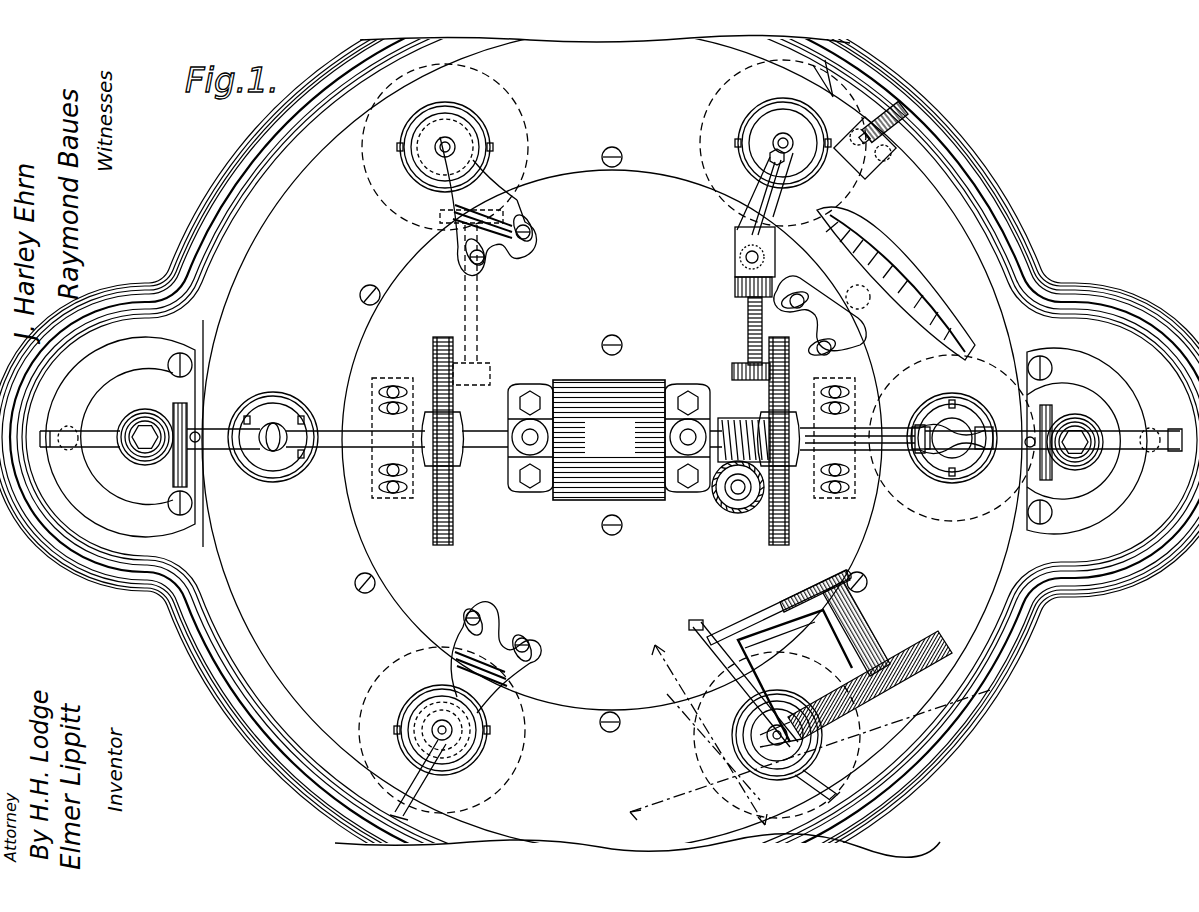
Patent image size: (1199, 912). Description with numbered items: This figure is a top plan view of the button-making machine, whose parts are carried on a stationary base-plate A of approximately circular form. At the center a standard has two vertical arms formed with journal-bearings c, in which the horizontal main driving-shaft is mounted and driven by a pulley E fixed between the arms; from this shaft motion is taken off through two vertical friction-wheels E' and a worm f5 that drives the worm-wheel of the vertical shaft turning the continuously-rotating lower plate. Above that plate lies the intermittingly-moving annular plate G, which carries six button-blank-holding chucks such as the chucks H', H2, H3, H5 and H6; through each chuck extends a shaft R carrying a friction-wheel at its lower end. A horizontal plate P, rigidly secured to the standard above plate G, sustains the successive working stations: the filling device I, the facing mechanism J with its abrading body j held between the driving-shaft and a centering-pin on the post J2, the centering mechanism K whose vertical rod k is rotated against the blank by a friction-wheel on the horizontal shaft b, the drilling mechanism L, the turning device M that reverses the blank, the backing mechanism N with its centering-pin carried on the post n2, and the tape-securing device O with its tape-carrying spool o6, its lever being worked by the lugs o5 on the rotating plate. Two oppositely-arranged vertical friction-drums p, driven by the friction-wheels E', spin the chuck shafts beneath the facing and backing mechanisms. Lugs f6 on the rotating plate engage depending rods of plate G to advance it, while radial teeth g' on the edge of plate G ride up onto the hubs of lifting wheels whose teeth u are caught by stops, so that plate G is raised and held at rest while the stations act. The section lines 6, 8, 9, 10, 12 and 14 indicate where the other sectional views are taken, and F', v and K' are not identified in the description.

The base-plate A is at (1000, 613).
The shaft R is at (905, 788).
The annular plate G is at (612, 440).
The inner plate F' is at (612, 440).
The horizontal plate P is at (611, 439).
The section line 12 is at (201, 434).
The cylindrical body j is at (282, 425).
The post J2 is at (130, 425).
The teeth u is at (596, 437).
The facing mechanism J is at (272, 450).
The friction-drums p is at (602, 438).
The friction-wheels E' is at (449, 441).
The journal-bearings c is at (602, 428).
The pulley E is at (679, 441).
The worm f5 is at (730, 418).
The lugs f6 is at (720, 506).
The section line 8 is at (751, 346).
The section line 9 is at (764, 225).
The button-blank-holding chuck H2 is at (768, 156).
The drilling mechanism L is at (783, 143).
The centering mechanism K is at (445, 147).
The button-blank-holding chuck H' is at (452, 122).
The vertical rod k is at (440, 170).
The slot v is at (448, 225).
The horizontal shaft b is at (478, 300).
The section line 14 is at (948, 246).
The turning device M is at (915, 322).
The bolt K' is at (860, 114).
The backing mechanism N is at (980, 392).
The button-blank-holding chuck H3 is at (932, 412).
The post n2 is at (1088, 424).
The filling device I is at (442, 730).
The button-blank-holding chuck H5 is at (425, 705).
The section line 6 is at (495, 640).
The radial teeth g' is at (615, 780).
The button-blank-holding chuck H6 is at (790, 700).
The tape-securing device O is at (755, 595).
The tape-carrying spool o6 is at (893, 650).
The lugs o5 is at (735, 683).
The section line 10 is at (810, 735).